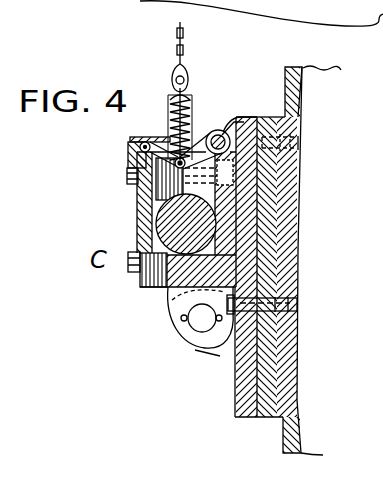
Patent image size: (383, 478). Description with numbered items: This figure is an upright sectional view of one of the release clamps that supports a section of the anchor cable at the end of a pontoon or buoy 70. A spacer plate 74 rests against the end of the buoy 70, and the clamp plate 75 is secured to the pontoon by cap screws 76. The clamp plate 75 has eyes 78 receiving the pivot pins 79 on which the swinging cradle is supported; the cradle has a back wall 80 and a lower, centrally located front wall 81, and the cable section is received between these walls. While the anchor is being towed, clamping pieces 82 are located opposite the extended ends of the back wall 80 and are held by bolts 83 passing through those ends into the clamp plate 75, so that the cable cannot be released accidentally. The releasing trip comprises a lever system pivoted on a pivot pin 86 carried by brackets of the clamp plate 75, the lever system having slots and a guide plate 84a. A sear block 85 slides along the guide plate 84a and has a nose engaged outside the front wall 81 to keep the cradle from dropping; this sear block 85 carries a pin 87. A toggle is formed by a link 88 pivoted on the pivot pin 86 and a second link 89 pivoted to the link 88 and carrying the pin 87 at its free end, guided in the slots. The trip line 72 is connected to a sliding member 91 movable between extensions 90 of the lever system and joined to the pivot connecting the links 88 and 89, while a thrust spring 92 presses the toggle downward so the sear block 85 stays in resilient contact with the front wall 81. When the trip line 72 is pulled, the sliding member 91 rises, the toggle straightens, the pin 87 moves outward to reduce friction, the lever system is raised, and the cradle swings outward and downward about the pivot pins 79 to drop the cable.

The buoy 70 is at (292, 430).
The trip line 72 is at (183, 37).
The spacer plate 74 is at (268, 187).
The clamp plate 75 is at (249, 355).
The cap screws 76 is at (304, 138).
The eyes 78 is at (231, 352).
The pivot pins 79 is at (200, 322).
The back wall 80 is at (226, 217).
The front wall 81 is at (170, 224).
The clamping pieces 82 is at (141, 281).
The bolts 83 is at (128, 180).
The guide plate 84a is at (130, 137).
The sear block 85 is at (128, 152).
The pivot pin 86 is at (236, 130).
The pin 87 is at (148, 137).
The link 88 is at (212, 133).
The second link 89 is at (166, 177).
The extensions 90 is at (191, 130).
The sliding member 91 is at (187, 82).
The thrust spring 92 is at (188, 125).